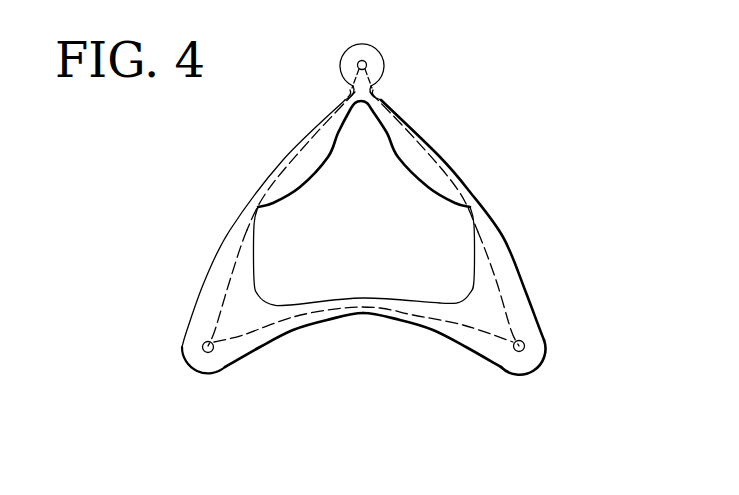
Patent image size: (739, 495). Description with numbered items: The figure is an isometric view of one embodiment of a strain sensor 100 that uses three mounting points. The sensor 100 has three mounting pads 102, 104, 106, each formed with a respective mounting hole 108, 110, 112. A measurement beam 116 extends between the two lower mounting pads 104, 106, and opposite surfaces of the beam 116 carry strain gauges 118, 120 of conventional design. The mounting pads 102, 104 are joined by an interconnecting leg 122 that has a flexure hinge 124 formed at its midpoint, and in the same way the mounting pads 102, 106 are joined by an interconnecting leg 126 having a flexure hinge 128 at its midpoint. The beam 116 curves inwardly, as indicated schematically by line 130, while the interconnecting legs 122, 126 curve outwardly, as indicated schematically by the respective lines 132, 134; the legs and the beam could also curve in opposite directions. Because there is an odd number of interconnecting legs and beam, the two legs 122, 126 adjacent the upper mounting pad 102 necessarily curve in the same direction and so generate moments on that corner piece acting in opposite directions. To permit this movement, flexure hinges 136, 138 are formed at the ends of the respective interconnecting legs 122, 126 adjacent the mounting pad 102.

The strain sensor 100 is at (541, 91).
The mounting pad 102 is at (370, 55).
The mounting pad 104 is at (192, 352).
The mounting pad 106 is at (532, 357).
The mounting hole 108 is at (359, 61).
The mounting hole 110 is at (212, 355).
The mounting hole 112 is at (513, 349).
The measurement beam 116 is at (313, 318).
The strain gauge 118 is at (361, 297).
The strain gauge 120 is at (360, 314).
The interconnecting leg 122 is at (230, 243).
The flexure hinge 124 is at (260, 198).
The interconnecting leg 126 is at (513, 290).
The flexure hinge 128 is at (467, 195).
The line 130 is at (420, 313).
The line 132 is at (225, 292).
The line 134 is at (488, 255).
The flexure hinge 136 is at (350, 90).
The flexure hinge 138 is at (373, 90).